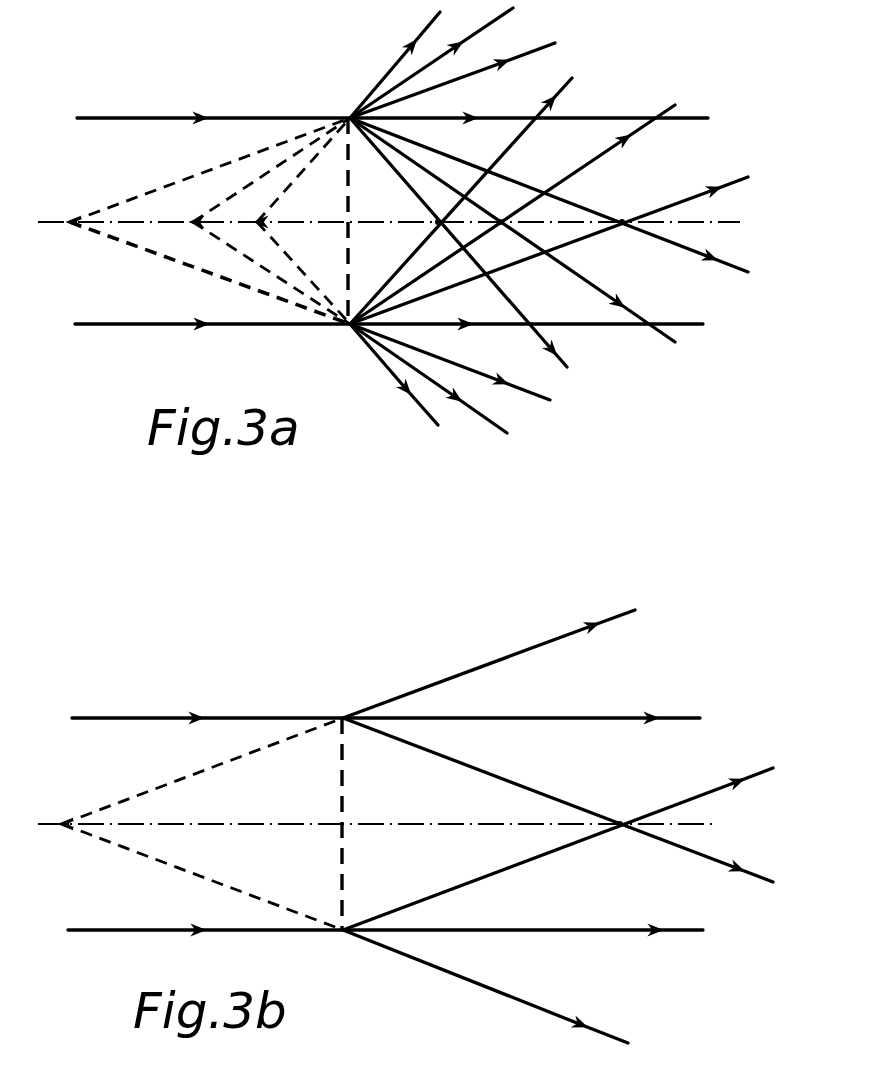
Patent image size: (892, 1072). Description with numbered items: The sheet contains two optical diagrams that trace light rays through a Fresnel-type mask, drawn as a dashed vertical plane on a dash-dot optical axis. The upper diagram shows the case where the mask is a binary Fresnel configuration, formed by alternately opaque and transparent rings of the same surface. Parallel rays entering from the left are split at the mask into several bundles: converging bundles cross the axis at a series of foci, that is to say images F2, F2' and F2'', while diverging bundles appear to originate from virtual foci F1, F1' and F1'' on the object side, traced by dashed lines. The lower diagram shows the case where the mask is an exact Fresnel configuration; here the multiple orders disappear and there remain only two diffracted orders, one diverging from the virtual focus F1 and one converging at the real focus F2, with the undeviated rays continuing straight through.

In FIG. 3A, the diffracted order F1 is at (200, 221).
In FIG. 3B, the diffracted order F1 is at (197, 824).
In FIG. 3A, the focus F1' is at (261, 221).
In FIG. 3A, the focus F1'' is at (293, 221).
In FIG. 3A, the focus (image) F2 is at (549, 221).
In FIG. 3B, the focus (image) F2 is at (558, 824).
In FIG. 3A, the focus (image) F2' is at (512, 223).
In FIG. 3A, the focus (image) F2'' is at (461, 222).